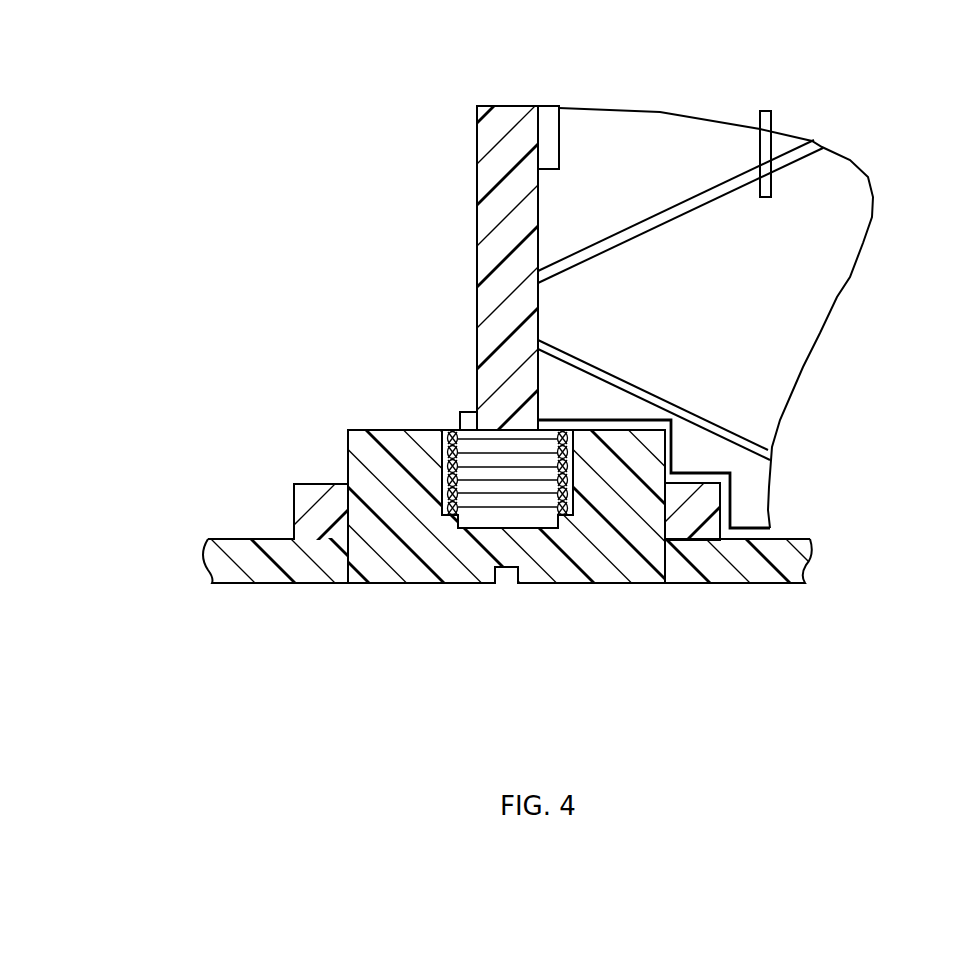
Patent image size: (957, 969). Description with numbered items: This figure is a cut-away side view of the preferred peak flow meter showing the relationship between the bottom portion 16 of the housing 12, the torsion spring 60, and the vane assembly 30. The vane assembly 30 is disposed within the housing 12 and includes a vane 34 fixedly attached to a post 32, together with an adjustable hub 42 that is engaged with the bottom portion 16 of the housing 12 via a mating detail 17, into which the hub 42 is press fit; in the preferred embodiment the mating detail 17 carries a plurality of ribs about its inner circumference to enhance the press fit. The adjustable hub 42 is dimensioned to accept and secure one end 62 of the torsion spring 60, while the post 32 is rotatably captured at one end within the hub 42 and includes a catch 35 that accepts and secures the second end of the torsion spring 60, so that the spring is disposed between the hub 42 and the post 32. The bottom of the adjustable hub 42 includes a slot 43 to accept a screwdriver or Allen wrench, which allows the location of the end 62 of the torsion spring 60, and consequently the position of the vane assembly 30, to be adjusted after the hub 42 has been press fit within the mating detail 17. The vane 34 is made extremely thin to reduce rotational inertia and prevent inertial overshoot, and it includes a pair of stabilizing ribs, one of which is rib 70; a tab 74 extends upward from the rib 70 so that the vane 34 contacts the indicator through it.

The housing 12 is at (717, 427).
The bottom portion 16 is at (274, 572).
The mating detail 17 is at (683, 514).
The vane assembly 30 is at (400, 321).
The post 32 is at (500, 142).
The vane 34 is at (805, 292).
The catch 35 is at (462, 421).
The adjustable hub 42 is at (385, 461).
The slot 43 is at (510, 574).
The torsion spring 60 is at (495, 497).
The end of torsion spring 62 is at (571, 500).
The stabilizing rib 70 is at (703, 197).
The tab 74 is at (767, 122).